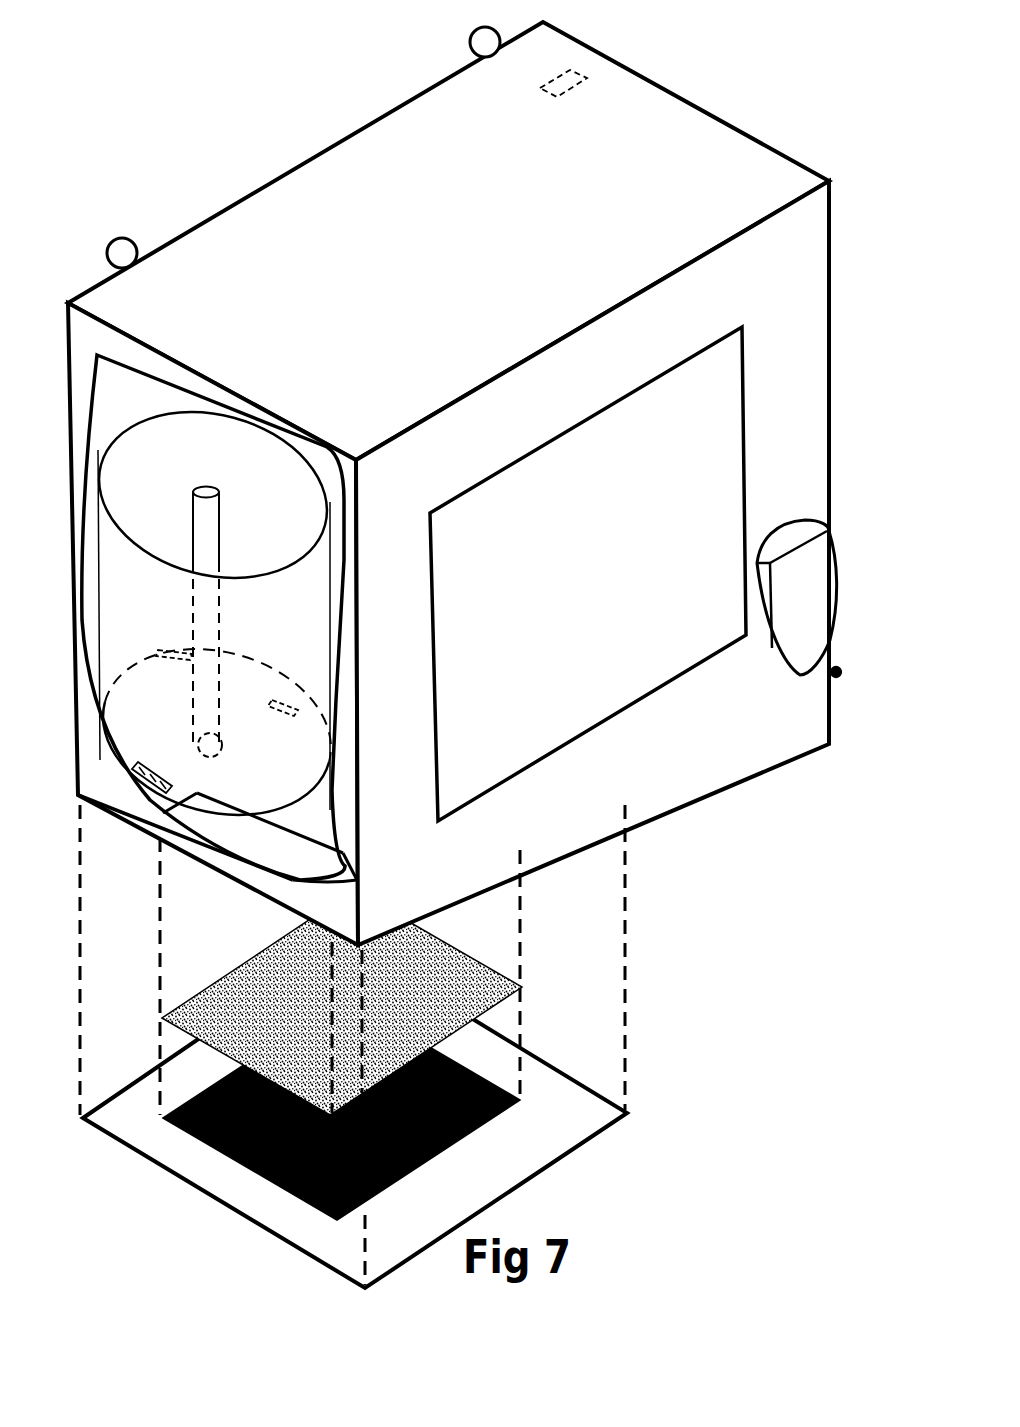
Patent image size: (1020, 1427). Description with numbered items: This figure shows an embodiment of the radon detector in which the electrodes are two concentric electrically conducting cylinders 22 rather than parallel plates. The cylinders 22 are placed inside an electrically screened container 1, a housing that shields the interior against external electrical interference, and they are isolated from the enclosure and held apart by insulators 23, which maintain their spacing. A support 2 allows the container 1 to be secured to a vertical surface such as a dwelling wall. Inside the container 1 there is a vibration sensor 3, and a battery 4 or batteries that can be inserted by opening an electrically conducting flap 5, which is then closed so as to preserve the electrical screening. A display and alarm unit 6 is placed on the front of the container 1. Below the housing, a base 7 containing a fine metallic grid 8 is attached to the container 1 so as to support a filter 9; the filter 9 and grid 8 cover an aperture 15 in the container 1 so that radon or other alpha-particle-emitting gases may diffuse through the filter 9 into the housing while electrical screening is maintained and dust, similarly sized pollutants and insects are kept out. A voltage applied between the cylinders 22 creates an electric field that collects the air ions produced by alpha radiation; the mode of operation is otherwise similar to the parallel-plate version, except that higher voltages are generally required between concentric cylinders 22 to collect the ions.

The electrically screened container 1 is at (72, 290).
The support 2 is at (470, 49).
The vibration sensor 3 is at (583, 78).
The battery 4 is at (782, 610).
The electrically conducting flap 5 is at (831, 757).
The display and alarm unit 6 is at (735, 611).
The base 7 is at (622, 1128).
The fine metallic grid 8 is at (410, 1177).
The filter 9 is at (490, 1005).
The aperture 15 is at (255, 848).
The concentric electrically conducting cylinders 22 is at (192, 500).
The insulators 23 is at (280, 706).